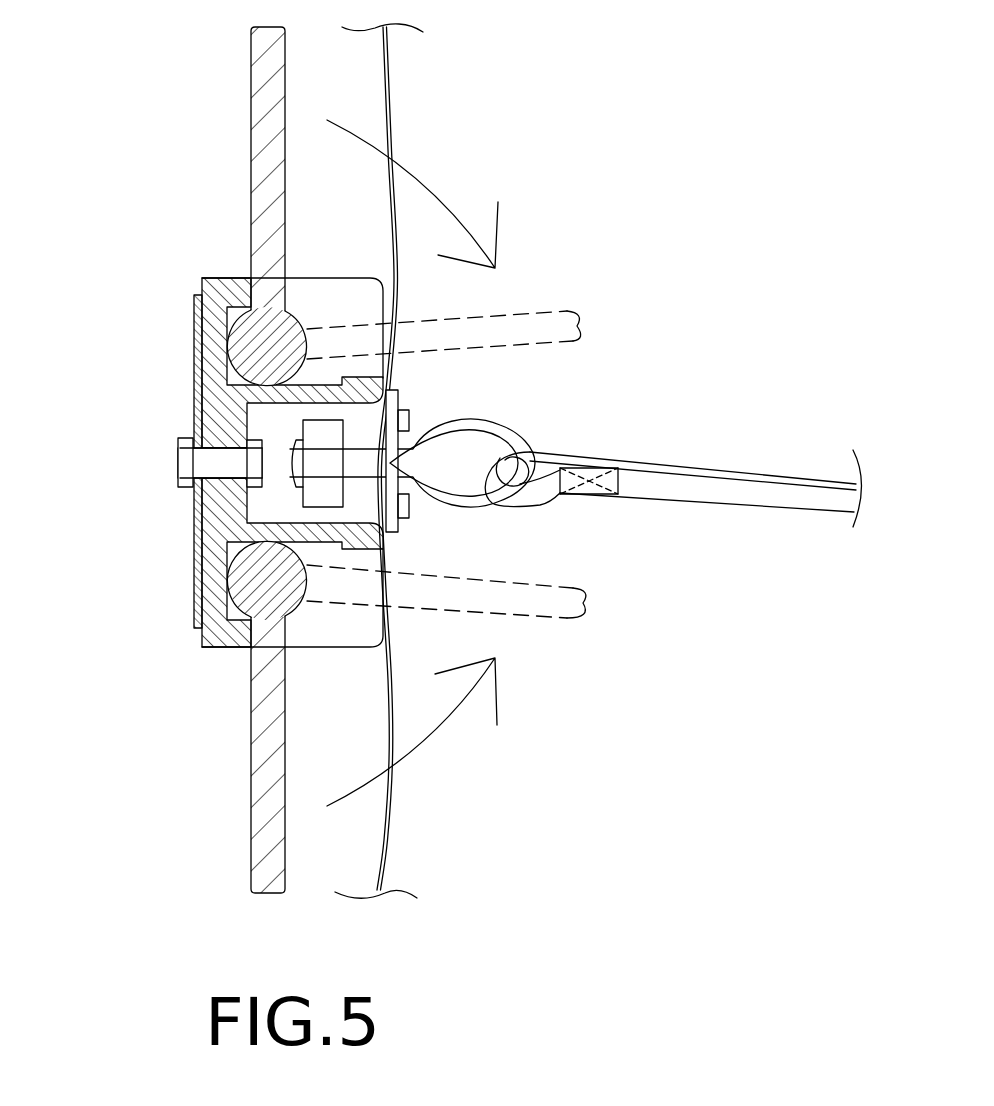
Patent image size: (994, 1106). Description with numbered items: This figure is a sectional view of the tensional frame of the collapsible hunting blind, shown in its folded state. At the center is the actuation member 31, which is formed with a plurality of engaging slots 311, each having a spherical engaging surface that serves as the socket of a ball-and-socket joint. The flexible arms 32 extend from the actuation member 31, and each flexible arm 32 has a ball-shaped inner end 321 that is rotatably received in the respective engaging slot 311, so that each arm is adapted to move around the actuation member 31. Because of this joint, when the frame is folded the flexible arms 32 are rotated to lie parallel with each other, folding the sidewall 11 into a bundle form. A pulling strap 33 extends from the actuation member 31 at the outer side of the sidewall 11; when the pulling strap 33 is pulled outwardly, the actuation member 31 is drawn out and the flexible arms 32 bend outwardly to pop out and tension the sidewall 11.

The sidewall 11 is at (390, 92).
The actuation member 31 is at (217, 398).
The engaging slot 311 is at (340, 303).
The flexible arm 32 is at (257, 82).
The inner end 321 is at (260, 345).
The pulling strap 33 is at (740, 490).